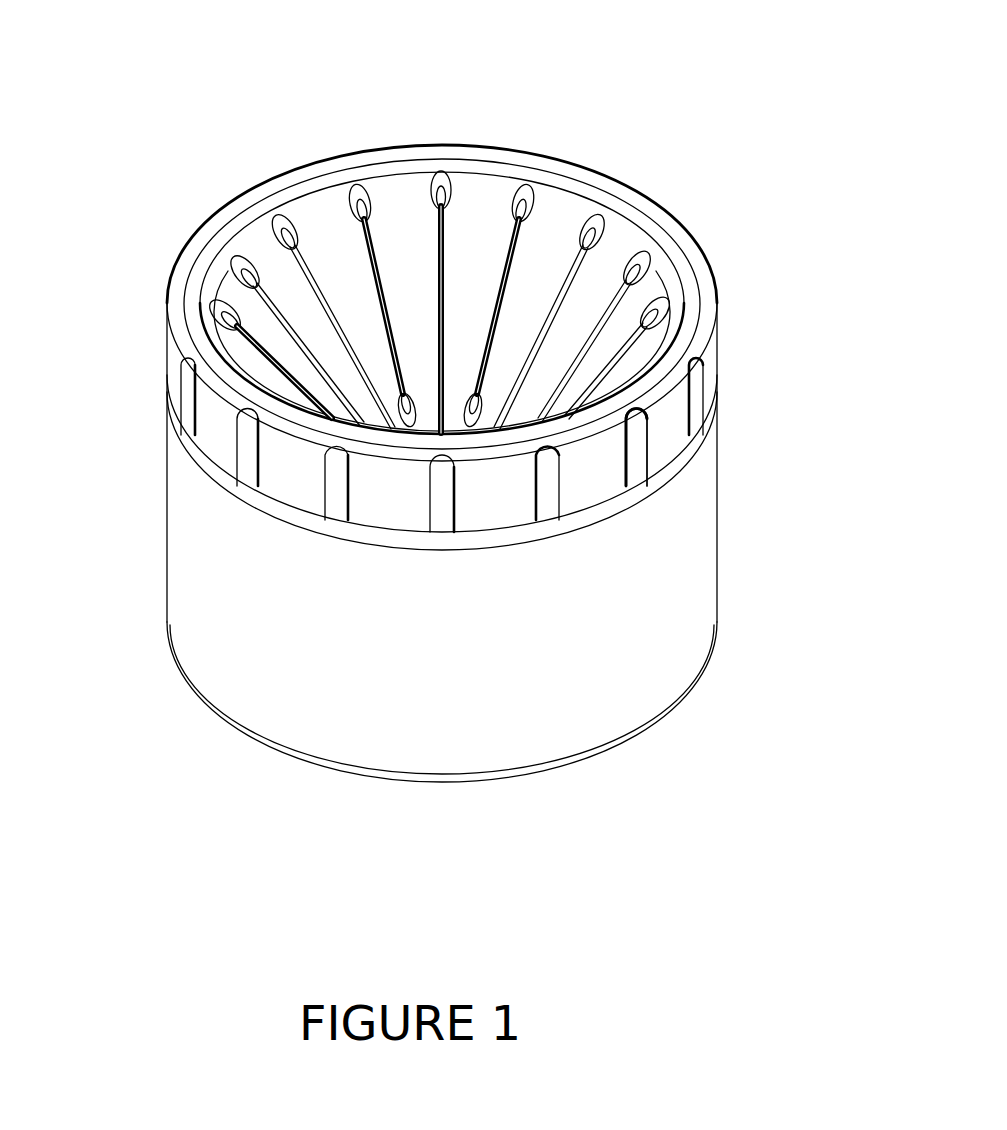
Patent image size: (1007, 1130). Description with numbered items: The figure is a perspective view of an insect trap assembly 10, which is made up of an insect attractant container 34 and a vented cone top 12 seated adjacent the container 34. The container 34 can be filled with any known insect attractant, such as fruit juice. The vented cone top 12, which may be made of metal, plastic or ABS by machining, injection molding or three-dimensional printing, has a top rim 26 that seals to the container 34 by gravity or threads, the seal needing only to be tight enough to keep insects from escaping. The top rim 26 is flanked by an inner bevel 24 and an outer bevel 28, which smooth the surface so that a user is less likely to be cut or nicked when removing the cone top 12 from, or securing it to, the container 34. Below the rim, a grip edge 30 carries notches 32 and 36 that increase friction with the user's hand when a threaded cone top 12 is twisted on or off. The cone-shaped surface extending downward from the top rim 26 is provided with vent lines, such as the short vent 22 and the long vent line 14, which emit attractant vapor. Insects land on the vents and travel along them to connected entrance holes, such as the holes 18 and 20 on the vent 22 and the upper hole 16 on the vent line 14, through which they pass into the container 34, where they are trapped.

The insect trap assembly 10 is at (672, 134).
The vented cone top 12 is at (152, 200).
The vent line 14 is at (280, 226).
The upper hole 16 is at (292, 222).
The hole 18 is at (396, 408).
The upper hole 20 is at (362, 198).
The vent 22 is at (368, 254).
The inner bevel 24 is at (520, 176).
The top rim 26 is at (624, 202).
The outer bevel 28 is at (703, 342).
The grip edge 30 is at (707, 380).
The notch 32 is at (633, 438).
The insect attractant container 34 is at (173, 555).
The notch 36 is at (190, 407).